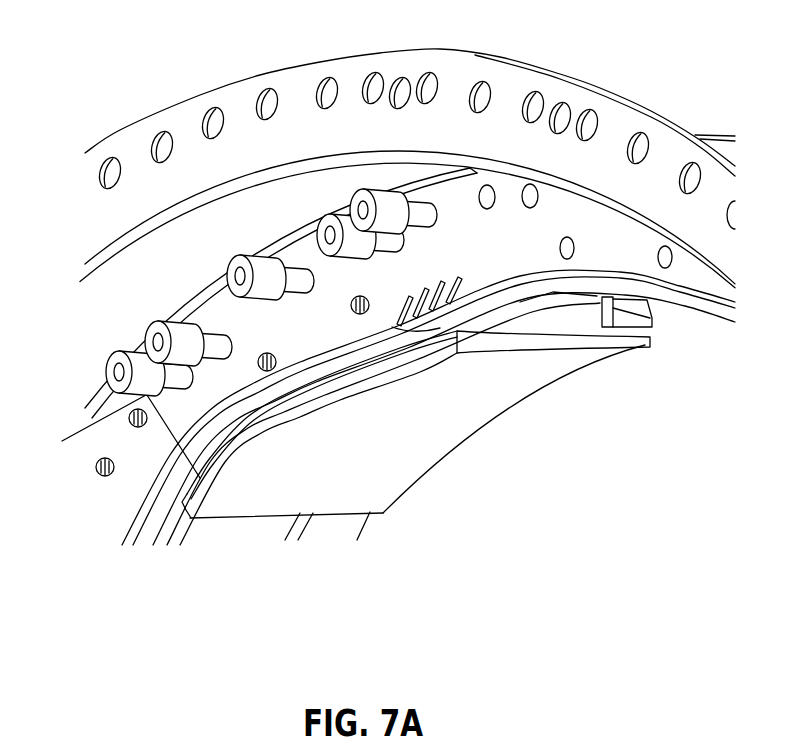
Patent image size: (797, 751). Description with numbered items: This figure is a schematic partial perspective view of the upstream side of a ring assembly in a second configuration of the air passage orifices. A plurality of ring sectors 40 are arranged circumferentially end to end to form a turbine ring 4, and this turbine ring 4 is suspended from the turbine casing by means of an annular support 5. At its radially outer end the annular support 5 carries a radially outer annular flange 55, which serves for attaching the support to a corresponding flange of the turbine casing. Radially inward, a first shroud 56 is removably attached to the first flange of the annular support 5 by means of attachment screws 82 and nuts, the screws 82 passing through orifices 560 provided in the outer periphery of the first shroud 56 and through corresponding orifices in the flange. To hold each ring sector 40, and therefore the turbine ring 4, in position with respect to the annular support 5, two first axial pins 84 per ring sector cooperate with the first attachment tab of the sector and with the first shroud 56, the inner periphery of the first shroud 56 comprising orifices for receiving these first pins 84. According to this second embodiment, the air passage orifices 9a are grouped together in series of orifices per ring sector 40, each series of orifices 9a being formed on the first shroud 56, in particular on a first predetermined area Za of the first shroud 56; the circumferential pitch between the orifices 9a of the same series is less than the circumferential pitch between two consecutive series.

The annular support 5 is at (651, 104).
The radially outer annular flange 55 is at (503, 93).
The first shroud 56 is at (714, 315).
The attachment screws 82 is at (143, 340).
The orifices 560 is at (98, 458).
The first axial pins 84 is at (258, 367).
The ring sectors 40 is at (303, 480).
The turbine ring 4 is at (273, 626).
The air passage orifices 9a is at (467, 170).
The first predetermined area Za is at (431, 330).